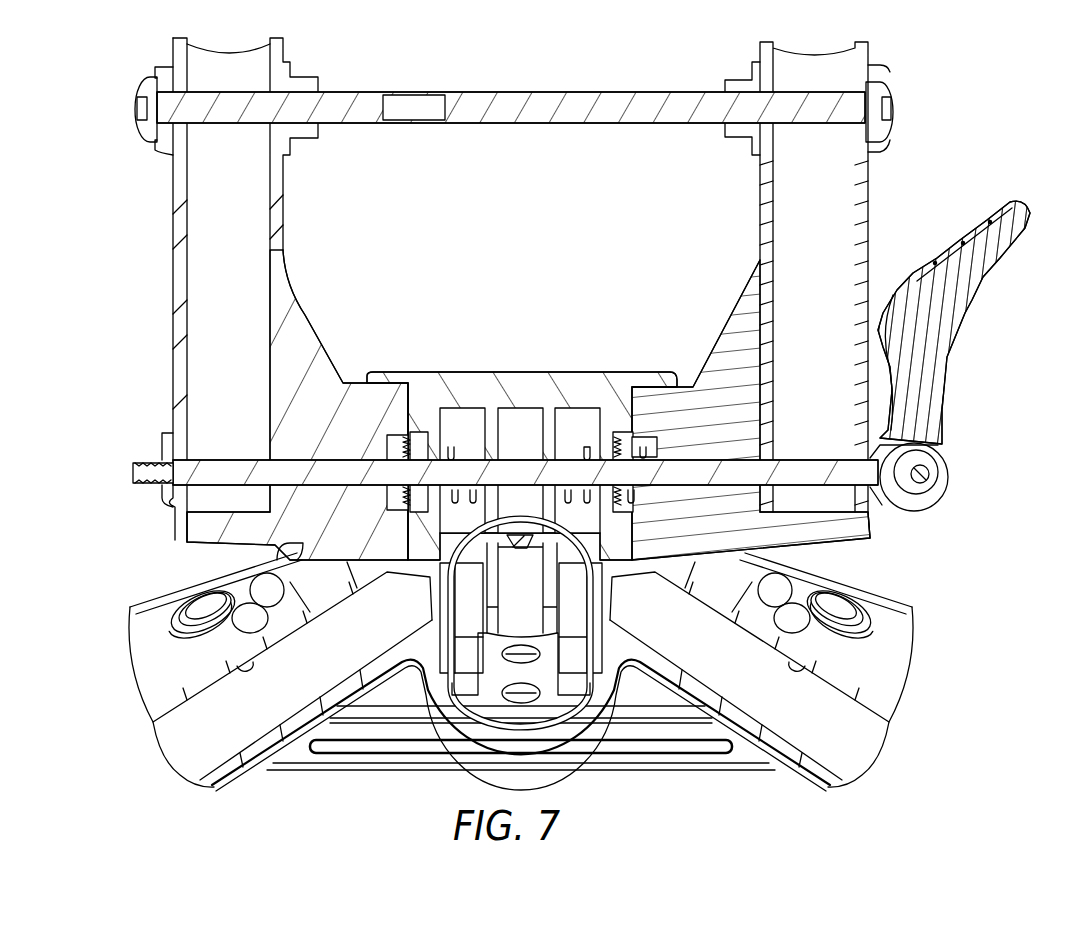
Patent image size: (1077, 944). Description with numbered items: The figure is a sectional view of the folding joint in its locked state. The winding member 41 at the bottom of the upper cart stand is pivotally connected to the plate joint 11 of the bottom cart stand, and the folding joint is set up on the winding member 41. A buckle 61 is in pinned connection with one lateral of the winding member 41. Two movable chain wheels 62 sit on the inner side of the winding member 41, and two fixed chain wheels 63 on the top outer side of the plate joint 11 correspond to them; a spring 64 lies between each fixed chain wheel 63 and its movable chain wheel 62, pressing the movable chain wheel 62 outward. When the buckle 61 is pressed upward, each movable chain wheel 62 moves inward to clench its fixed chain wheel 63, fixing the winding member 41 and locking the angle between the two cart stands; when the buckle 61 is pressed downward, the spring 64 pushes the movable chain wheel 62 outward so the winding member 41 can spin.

The plate joint 11 is at (460, 387).
The winding member 41 is at (865, 228).
The buckle 61 is at (930, 342).
The movable chain wheel 62 is at (737, 377).
The fixed chain wheel 63 is at (613, 448).
The spring 64 is at (585, 447).